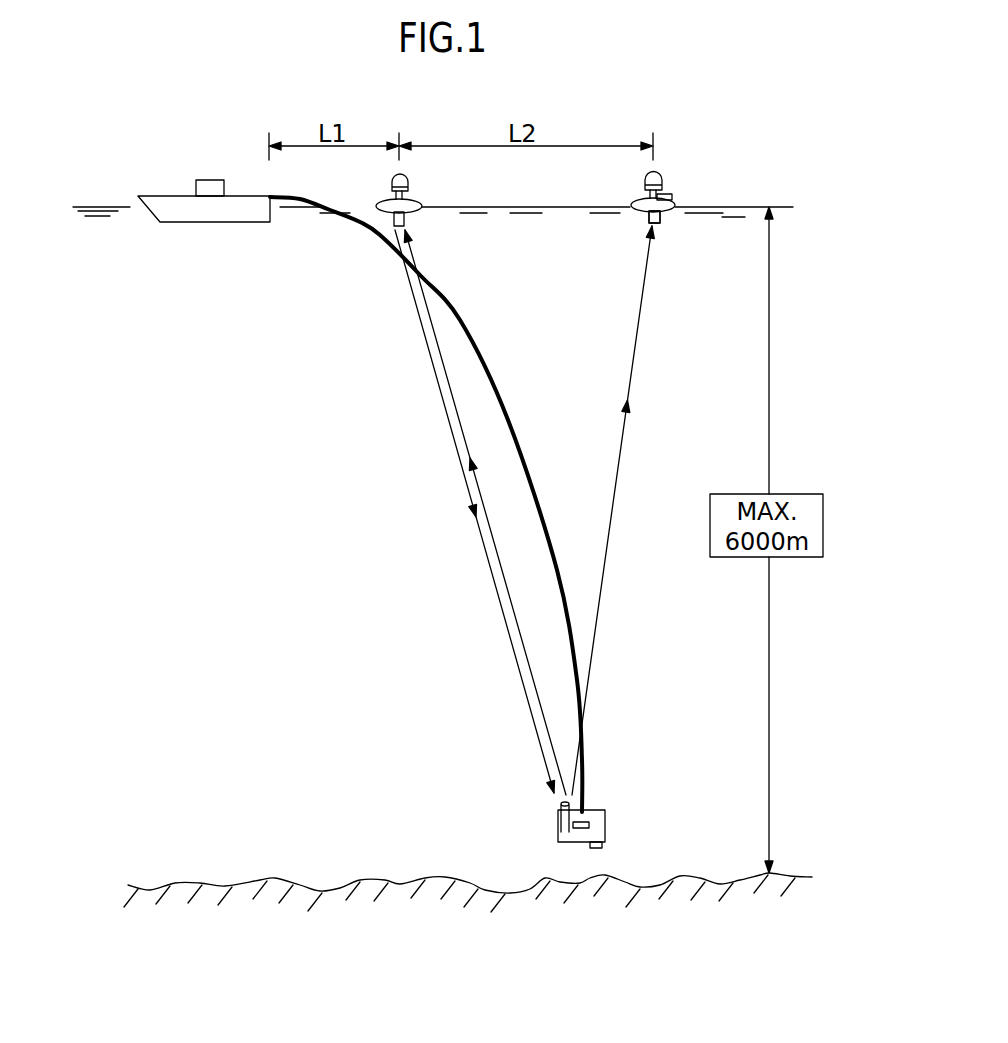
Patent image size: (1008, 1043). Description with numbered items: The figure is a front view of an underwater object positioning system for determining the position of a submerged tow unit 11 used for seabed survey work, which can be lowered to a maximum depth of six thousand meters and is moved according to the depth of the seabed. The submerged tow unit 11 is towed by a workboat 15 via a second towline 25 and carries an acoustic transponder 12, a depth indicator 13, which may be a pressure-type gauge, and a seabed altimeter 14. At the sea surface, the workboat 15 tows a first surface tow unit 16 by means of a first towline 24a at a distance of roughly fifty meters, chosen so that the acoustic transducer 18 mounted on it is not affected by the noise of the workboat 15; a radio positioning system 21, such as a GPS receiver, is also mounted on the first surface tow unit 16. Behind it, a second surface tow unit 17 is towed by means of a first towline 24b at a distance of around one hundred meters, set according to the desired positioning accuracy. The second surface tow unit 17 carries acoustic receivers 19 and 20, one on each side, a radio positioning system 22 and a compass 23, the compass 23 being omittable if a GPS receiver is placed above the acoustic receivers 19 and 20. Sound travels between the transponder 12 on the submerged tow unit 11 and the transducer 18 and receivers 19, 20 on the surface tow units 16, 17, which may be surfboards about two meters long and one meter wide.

The submerged tow unit 11 is at (595, 810).
The acoustic transponder 12 is at (561, 820).
The depth indicator 13 is at (590, 825).
The seabed altimeter 14 is at (602, 846).
The workboat 15 is at (165, 196).
The first surface tow unit 16 is at (417, 202).
The second surface tow unit 17 is at (640, 200).
The acoustic transducer 18 is at (405, 218).
The acoustic receiver 19 is at (660, 218).
The acoustic receiver 20 is at (654, 217).
The radio positioning system 21 is at (407, 178).
The radio positioning system 22 is at (660, 175).
The compass 23 is at (672, 197).
The first towline 24a is at (348, 206).
The first towline 24b is at (529, 206).
The second towline 25 is at (487, 362).